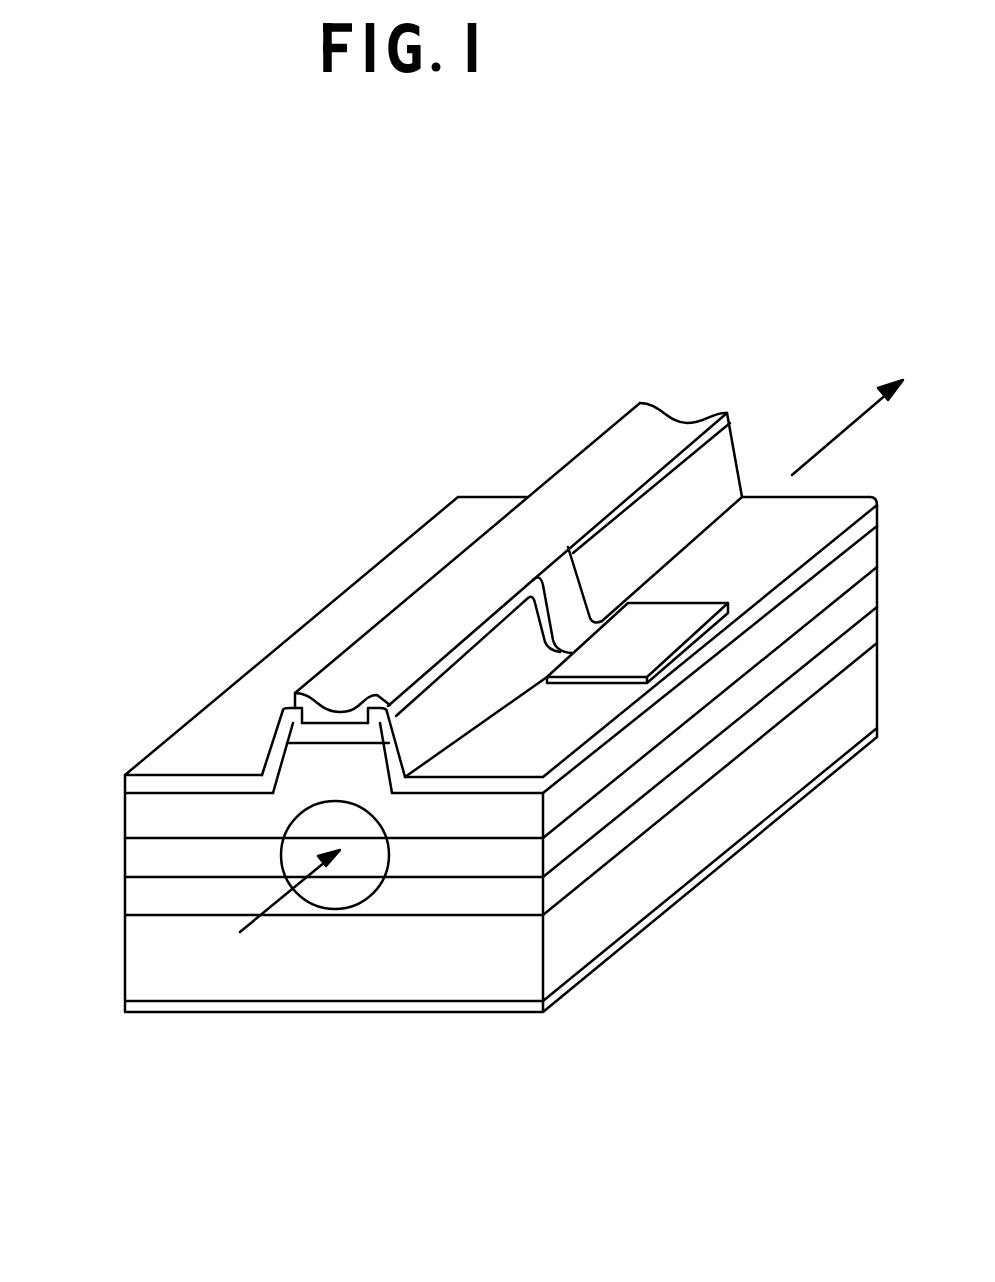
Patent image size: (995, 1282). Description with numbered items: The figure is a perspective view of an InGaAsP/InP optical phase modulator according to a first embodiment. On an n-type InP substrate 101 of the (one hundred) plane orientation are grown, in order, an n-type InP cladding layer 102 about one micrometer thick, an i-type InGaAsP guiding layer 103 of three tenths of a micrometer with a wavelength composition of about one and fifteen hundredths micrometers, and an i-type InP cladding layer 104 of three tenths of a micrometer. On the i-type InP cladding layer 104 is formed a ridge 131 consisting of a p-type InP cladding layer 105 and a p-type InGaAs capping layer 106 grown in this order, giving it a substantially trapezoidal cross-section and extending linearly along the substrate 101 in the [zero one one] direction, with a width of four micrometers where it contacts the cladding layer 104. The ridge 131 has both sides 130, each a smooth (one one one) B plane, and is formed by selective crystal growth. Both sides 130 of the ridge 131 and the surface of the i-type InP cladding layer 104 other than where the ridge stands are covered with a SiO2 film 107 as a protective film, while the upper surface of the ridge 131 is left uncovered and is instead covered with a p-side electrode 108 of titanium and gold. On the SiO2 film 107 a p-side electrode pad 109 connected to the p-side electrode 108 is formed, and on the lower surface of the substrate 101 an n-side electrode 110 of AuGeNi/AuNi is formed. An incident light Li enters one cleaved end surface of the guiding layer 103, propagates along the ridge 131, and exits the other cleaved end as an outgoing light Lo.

The n-type InP substrate 101 is at (312, 983).
The n-type InP cladding layer 102 is at (158, 897).
The i-type InGaAsP guiding layer 103 is at (212, 865).
The i-type InP cladding layer 104 is at (137, 812).
The p-type InP cladding layer 105 is at (297, 773).
The p-type InGaAs capping layer 106 is at (282, 705).
The SiO2 film 107 is at (438, 543).
The p-side electrode 108 is at (355, 665).
The p-side electrode pad 109 is at (630, 627).
The n-side electrode 110 is at (747, 840).
The sides of the ridge 130 is at (393, 775).
The ridge 131 is at (305, 748).
The incident light Li is at (259, 930).
The outgoing light Lo is at (843, 430).